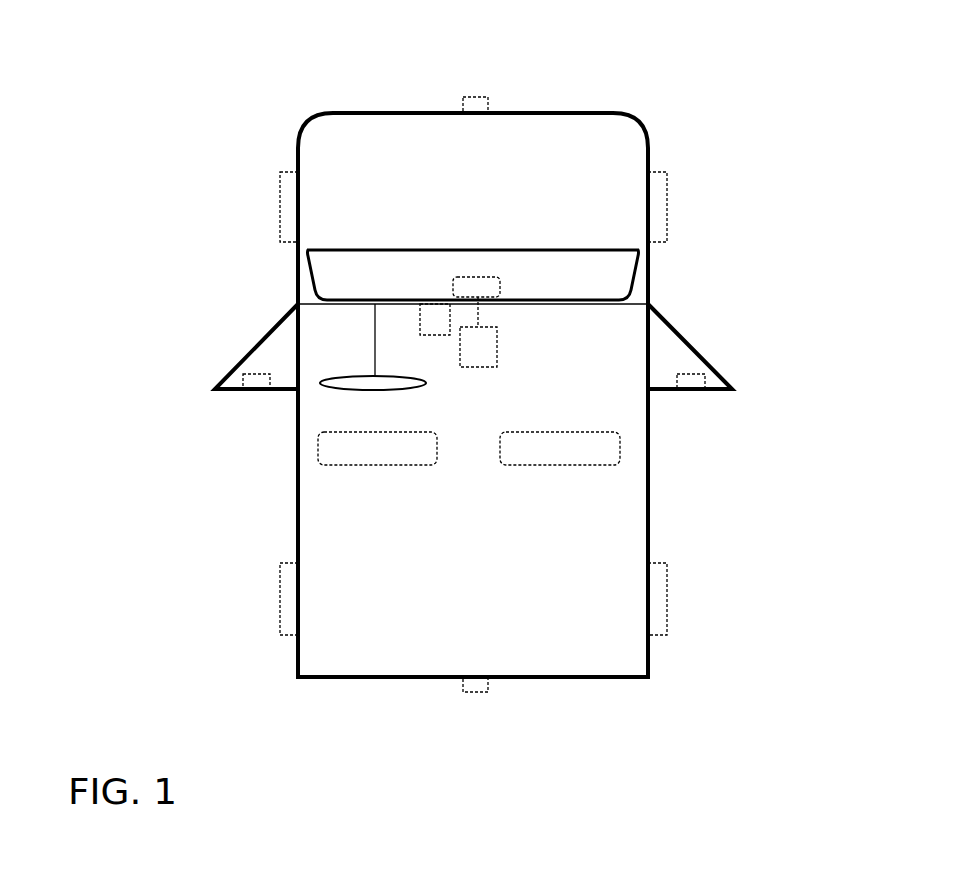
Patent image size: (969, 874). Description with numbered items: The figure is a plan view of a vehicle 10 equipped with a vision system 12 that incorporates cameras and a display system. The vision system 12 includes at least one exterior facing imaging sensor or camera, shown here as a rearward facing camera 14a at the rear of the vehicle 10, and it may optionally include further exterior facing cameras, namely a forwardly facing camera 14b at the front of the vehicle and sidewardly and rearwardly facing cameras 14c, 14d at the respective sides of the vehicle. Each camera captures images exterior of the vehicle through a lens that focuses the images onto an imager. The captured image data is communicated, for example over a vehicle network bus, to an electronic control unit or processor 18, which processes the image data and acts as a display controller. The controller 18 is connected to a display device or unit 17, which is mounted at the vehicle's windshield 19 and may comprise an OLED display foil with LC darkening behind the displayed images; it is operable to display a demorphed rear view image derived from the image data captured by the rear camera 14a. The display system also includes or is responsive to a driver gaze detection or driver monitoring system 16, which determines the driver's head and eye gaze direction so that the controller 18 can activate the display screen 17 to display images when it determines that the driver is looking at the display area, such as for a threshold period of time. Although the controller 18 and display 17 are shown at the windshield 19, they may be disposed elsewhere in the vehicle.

The vehicle 10 is at (216, 121).
The vision system 12 is at (421, 710).
The rearward facing camera 14a is at (477, 692).
The forwardly facing camera 14b is at (477, 98).
The sidewardly/rearwardly facing camera 14c is at (247, 380).
The sidewardly/rearwardly facing camera 14d is at (708, 390).
The driver monitoring system 16 is at (438, 327).
The display device 17 is at (490, 290).
The electronic control unit 18 is at (487, 347).
The windshield 19 is at (626, 292).